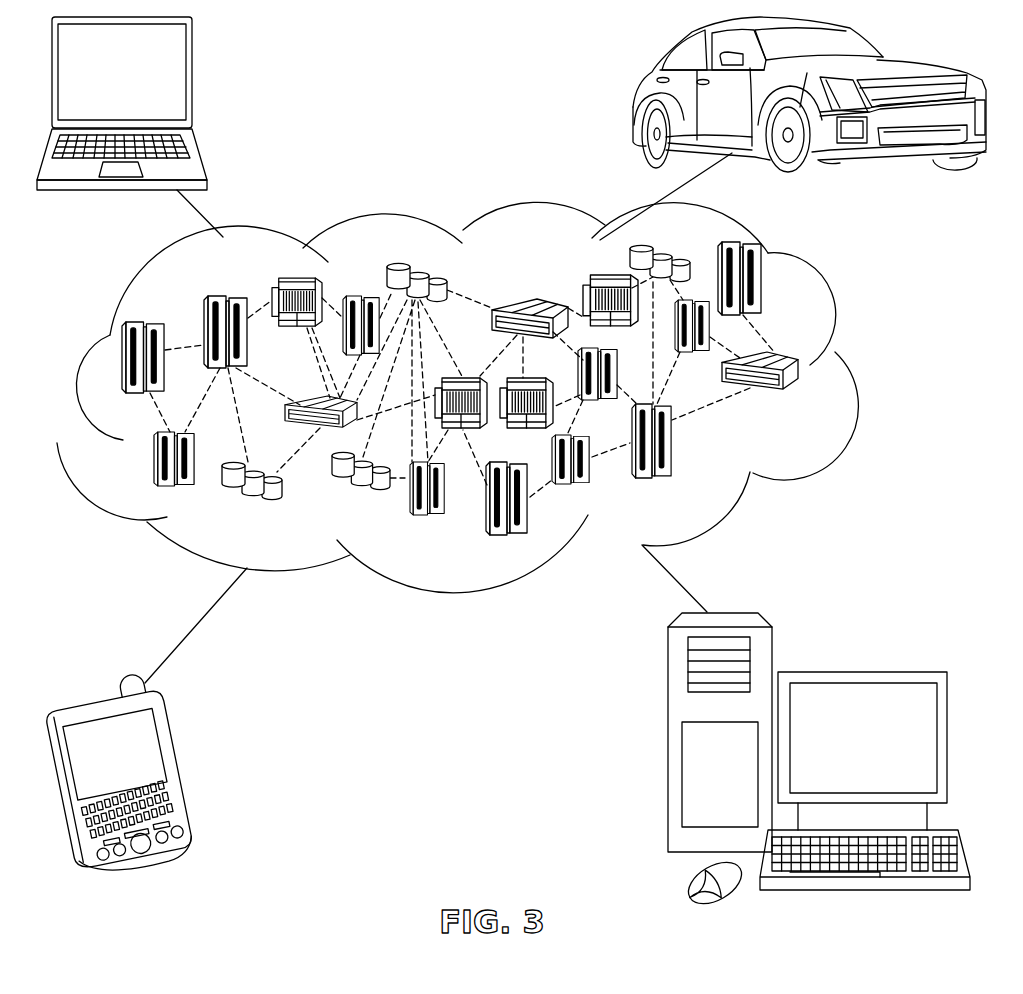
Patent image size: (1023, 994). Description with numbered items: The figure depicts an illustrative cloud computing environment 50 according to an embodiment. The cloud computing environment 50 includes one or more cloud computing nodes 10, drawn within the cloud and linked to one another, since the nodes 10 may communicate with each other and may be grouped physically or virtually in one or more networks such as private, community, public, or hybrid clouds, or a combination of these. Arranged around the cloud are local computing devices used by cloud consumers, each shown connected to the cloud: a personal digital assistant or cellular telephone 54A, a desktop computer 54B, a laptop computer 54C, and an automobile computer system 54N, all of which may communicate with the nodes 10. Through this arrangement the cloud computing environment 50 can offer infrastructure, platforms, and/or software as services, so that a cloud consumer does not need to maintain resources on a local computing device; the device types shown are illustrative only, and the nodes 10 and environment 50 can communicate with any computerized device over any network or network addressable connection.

The laptop computer 54C is at (192, 80).
The automobile computer system 54N is at (638, 100).
The personal digital assistant or cellular telephone 54A is at (180, 768).
The desktop computer 54B is at (860, 672).
The cloud computing environment 50 is at (860, 368).
The cloud computing node 10 is at (803, 399).